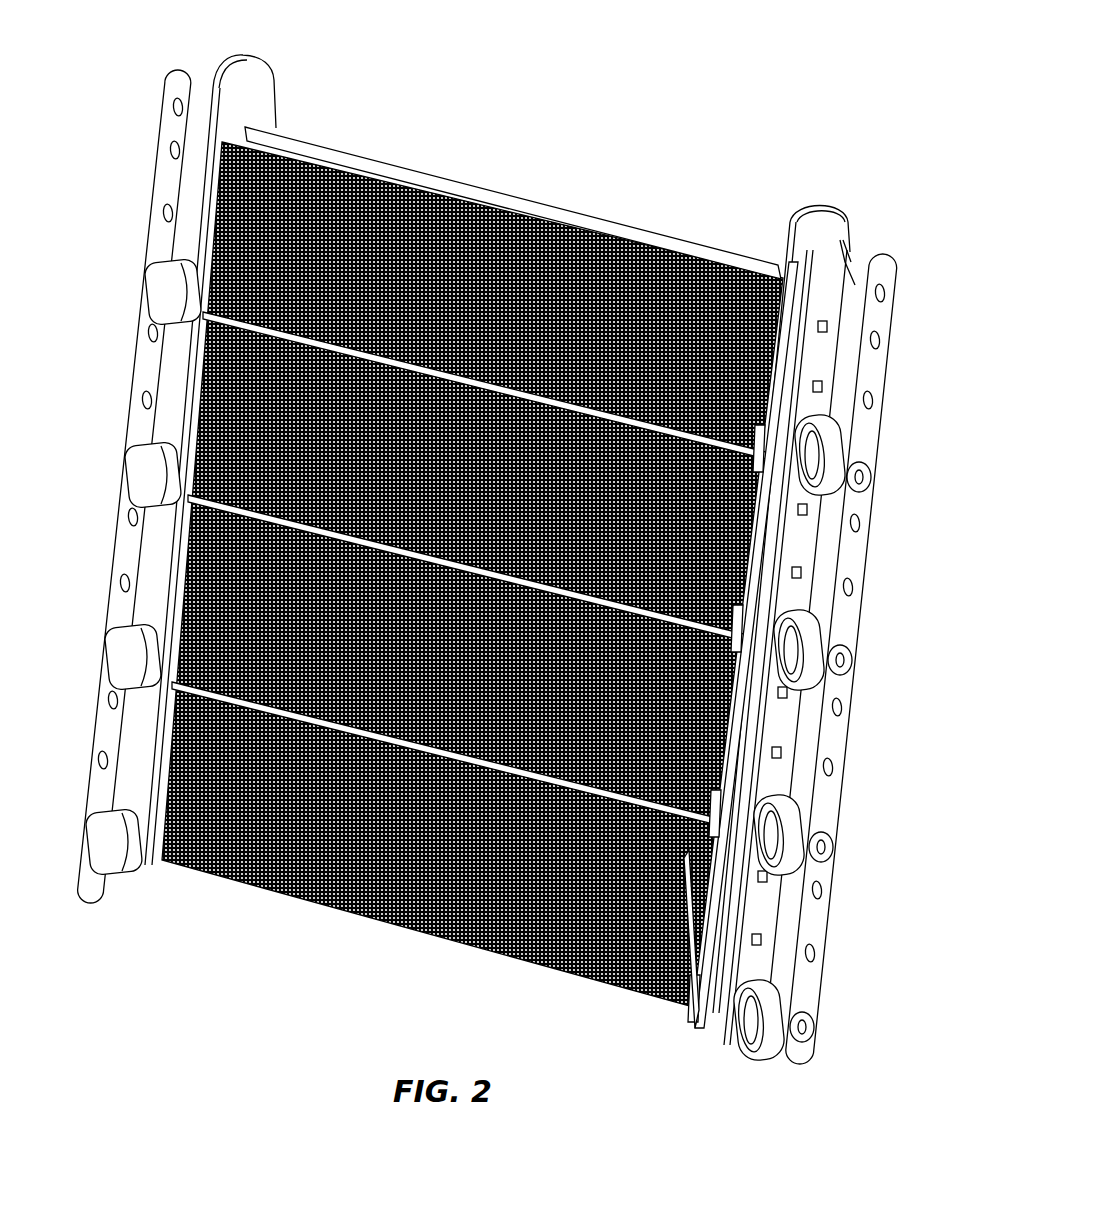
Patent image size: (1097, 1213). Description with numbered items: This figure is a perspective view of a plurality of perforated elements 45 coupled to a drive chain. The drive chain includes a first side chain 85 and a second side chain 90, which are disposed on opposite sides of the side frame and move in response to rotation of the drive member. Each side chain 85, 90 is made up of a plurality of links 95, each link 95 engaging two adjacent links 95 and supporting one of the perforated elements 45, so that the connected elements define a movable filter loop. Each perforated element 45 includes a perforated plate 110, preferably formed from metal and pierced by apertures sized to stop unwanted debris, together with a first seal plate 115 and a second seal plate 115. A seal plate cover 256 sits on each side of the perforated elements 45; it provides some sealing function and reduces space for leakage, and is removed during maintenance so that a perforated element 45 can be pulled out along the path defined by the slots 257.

The perforated element 45 is at (198, 397).
The perforated plate 110 is at (413, 195).
The seal plate 115 is at (262, 80).
The link 95 is at (167, 180).
The second side chain 90 is at (158, 272).
The first side chain 85 is at (852, 555).
The seal plate cover 256 is at (773, 432).
The slot 257 is at (843, 262).